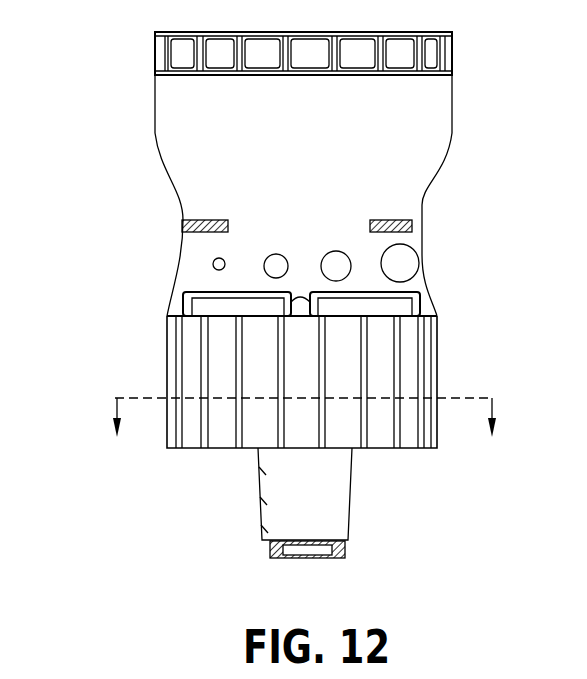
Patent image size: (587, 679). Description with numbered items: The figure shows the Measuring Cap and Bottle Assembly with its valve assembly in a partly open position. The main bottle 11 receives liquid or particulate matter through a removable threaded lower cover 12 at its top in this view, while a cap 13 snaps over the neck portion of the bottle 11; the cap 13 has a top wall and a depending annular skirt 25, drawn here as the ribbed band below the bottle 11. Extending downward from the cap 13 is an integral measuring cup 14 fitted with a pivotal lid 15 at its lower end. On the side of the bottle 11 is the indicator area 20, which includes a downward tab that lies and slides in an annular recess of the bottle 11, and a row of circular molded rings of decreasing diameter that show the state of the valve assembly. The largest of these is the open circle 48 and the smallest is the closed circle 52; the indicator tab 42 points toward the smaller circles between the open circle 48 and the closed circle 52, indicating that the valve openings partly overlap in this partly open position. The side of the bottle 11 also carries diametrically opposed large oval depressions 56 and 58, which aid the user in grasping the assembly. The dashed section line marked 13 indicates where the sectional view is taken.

The bottle 11 is at (410, 120).
The removable threaded lower cover 12 is at (155, 52).
The cap 13 is at (308, 441).
The integral measuring cup 14 is at (268, 493).
The pivotal lid 15 is at (273, 560).
The indicator area 20 is at (261, 188).
The depending annular skirt 25 is at (193, 422).
The indicator tab 42 is at (305, 305).
The open circle 48 is at (420, 253).
The closed circle 52 is at (183, 266).
The large oval depression 56 is at (177, 199).
The large oval depression 58 is at (423, 197).